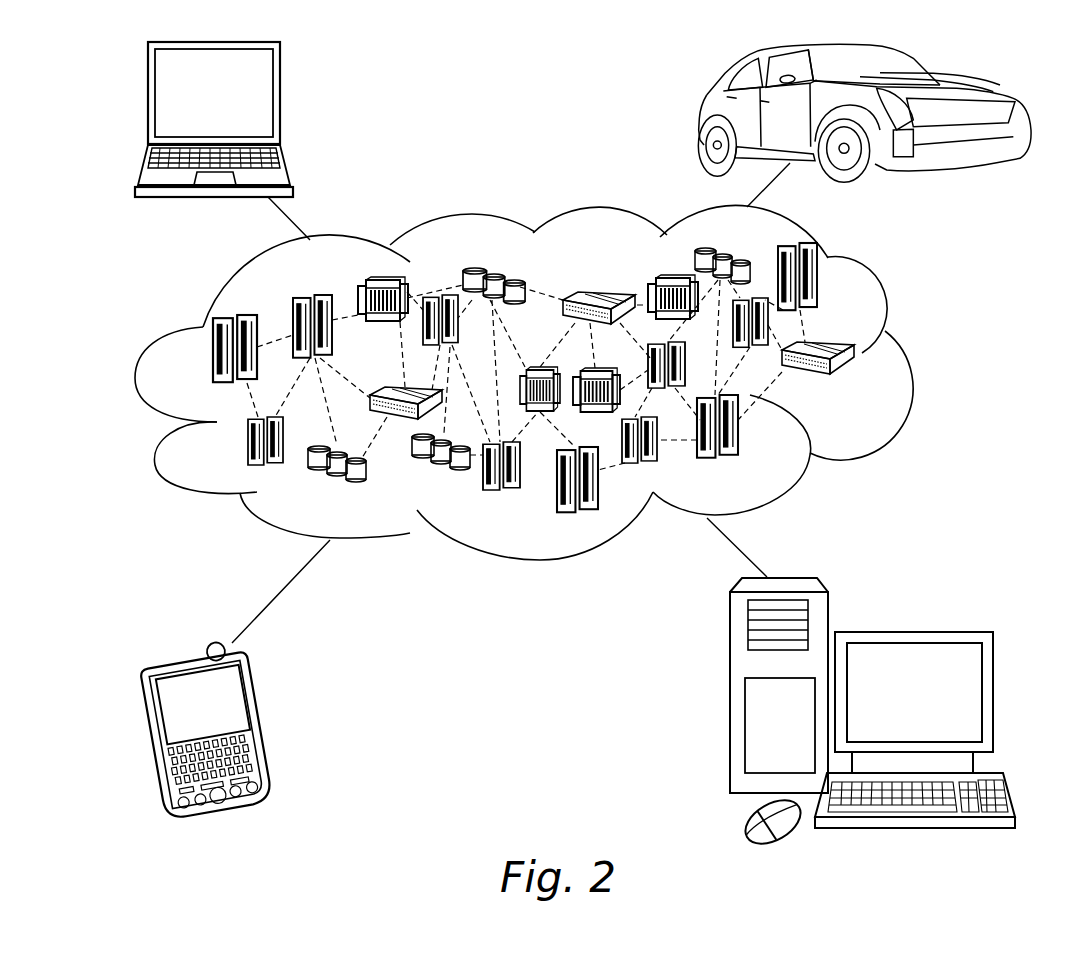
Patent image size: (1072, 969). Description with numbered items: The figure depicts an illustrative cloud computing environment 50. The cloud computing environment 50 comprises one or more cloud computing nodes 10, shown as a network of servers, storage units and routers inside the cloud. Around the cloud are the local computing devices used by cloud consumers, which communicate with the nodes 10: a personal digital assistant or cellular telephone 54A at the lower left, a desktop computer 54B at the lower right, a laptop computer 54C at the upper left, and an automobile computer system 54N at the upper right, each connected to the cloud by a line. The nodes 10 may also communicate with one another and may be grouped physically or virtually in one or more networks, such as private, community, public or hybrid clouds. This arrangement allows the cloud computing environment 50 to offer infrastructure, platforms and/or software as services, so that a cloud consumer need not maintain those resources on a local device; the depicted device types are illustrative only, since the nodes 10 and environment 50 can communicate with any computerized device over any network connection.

The cloud computing node 10 is at (866, 390).
The cloud computing environment 50 is at (913, 357).
The personal digital assistant or cellular telephone 54A is at (270, 720).
The desktop computer 54B is at (910, 632).
The laptop computer 54C is at (280, 99).
The automobile computer system 54N is at (703, 118).